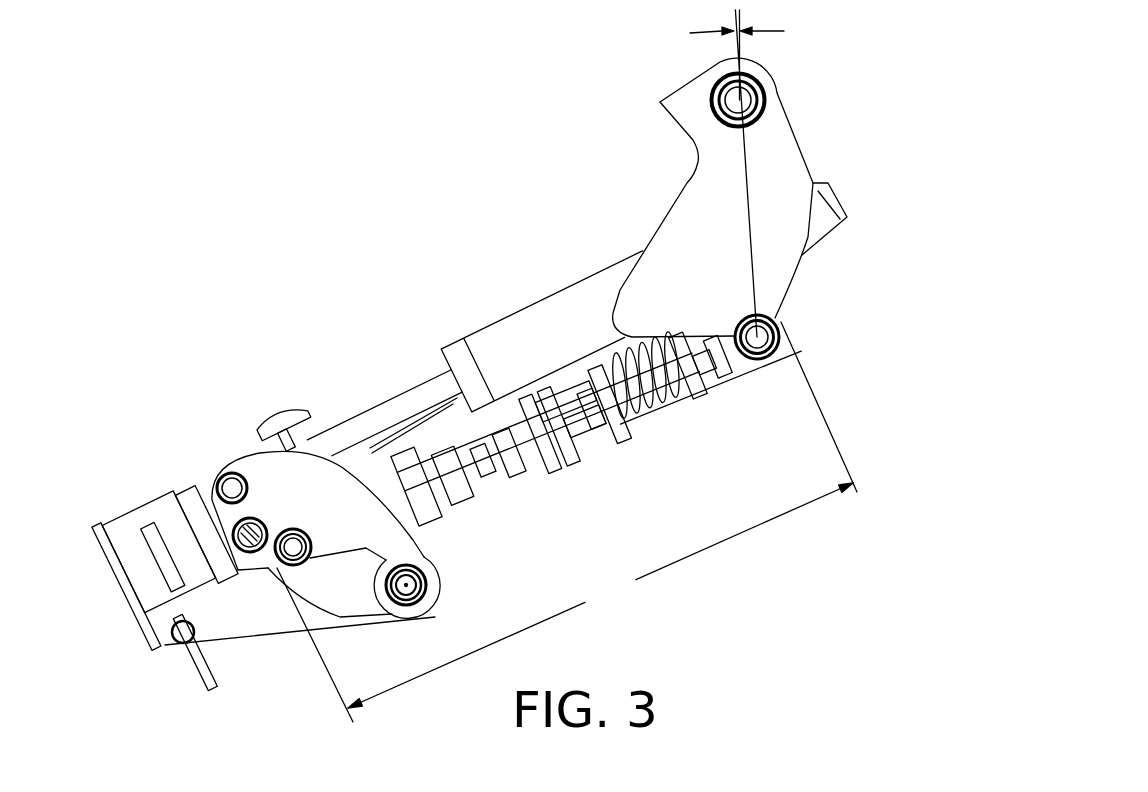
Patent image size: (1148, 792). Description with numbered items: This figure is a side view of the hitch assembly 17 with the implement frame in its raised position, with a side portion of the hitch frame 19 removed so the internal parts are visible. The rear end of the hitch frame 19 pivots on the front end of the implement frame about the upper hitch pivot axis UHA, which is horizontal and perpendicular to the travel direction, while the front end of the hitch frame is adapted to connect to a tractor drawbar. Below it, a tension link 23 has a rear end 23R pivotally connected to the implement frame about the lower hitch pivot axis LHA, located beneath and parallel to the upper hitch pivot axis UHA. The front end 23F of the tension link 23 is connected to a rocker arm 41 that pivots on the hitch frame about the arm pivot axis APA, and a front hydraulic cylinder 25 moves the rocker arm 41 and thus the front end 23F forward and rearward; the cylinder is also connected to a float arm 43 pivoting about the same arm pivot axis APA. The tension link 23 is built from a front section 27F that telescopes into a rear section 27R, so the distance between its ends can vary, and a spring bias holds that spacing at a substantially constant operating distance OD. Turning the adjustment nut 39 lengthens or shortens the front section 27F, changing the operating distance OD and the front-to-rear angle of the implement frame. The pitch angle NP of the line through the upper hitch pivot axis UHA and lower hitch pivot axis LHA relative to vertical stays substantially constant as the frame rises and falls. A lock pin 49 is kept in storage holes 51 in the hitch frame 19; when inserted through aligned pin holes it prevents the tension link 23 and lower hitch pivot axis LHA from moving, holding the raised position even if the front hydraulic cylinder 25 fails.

The hitch assembly 17 is at (430, 146).
The hitch frame 19 is at (378, 445).
The tension link 23 is at (460, 447).
The front end of the tension link 23F is at (261, 578).
The rear end of the tension link 23R is at (780, 317).
The front hydraulic cylinder 25 is at (504, 318).
The front section of the tension link 27F is at (560, 477).
The rear section of the tension link 27R is at (630, 442).
The adjustment nut 39 is at (517, 473).
The rocker arm 41 is at (333, 620).
The float arm 43 is at (245, 452).
The lock pin 49 is at (195, 676).
The storage holes 51 is at (167, 644).
The arm pivot axis APA is at (428, 582).
The upper hitch pivot axis UHA is at (738, 100).
The lower hitch pivot axis LHA is at (775, 343).
The pitch angle NP is at (758, 173).
The operating distance OD is at (567, 522).